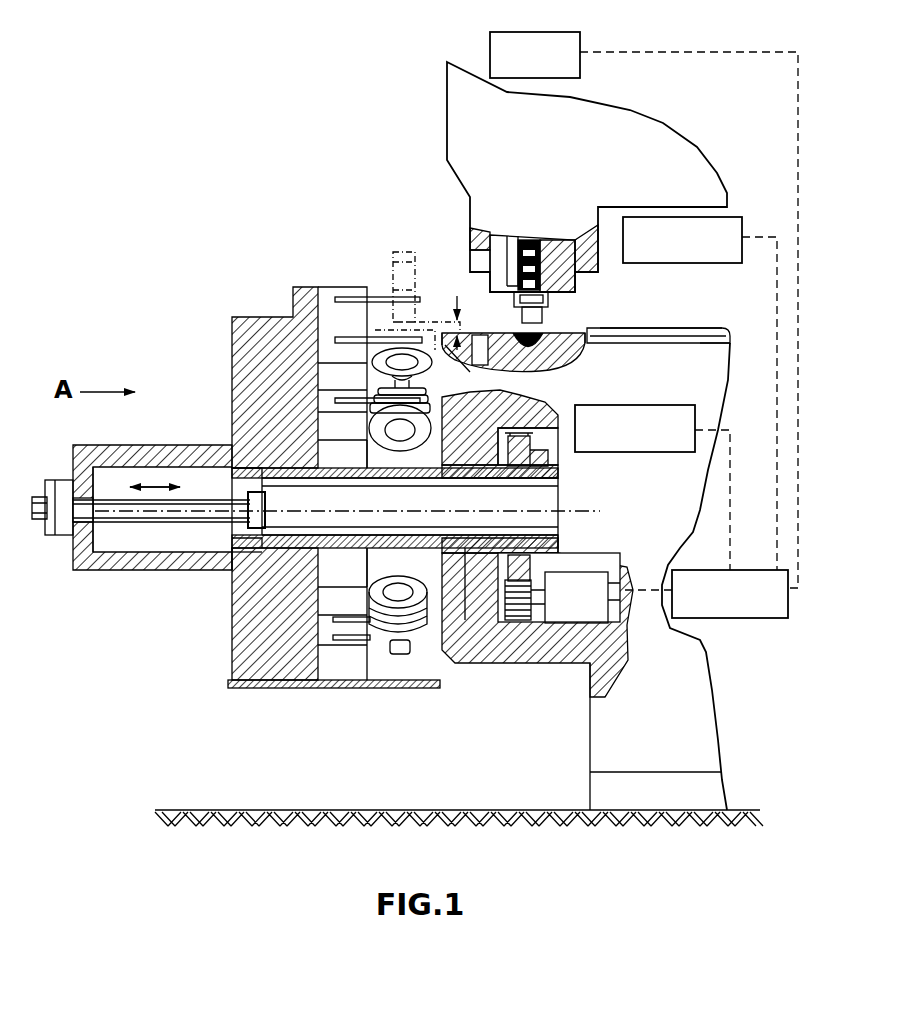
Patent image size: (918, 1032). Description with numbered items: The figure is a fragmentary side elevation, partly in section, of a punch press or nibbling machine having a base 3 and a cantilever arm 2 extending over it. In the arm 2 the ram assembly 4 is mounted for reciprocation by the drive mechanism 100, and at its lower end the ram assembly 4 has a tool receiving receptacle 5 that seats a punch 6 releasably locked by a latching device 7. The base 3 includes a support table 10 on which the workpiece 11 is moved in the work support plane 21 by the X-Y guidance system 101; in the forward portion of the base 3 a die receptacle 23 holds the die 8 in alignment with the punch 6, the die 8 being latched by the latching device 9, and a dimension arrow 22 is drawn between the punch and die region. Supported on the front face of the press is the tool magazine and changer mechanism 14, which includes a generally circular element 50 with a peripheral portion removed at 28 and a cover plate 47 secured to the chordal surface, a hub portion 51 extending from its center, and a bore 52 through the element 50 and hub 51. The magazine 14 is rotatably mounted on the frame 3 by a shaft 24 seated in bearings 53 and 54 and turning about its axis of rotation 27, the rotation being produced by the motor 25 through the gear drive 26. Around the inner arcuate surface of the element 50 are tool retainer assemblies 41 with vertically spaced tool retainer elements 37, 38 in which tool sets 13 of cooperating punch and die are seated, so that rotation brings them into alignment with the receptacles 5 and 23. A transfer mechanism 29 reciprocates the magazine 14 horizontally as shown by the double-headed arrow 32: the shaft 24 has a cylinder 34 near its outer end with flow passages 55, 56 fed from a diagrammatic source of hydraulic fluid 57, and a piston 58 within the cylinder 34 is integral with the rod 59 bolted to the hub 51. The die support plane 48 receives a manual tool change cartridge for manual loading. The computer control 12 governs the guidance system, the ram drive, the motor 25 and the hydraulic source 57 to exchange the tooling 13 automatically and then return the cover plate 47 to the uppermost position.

The cantilever arm 2 is at (673, 178).
The base 3 is at (690, 400).
The ram assembly 4 is at (578, 284).
The tool receiving receptacle 5 is at (497, 263).
The punch 6 is at (540, 240).
The latching device 7 is at (510, 244).
The die 8 is at (573, 346).
The latching device 9 is at (497, 362).
The support table 10 is at (718, 341).
The workpiece 11 is at (640, 329).
The computer control 12 is at (755, 570).
The tool set 13 is at (552, 313).
The tool magazine and changer mechanism 14 is at (265, 314).
The work support plane 21 is at (668, 329).
The gap 22 is at (473, 313).
The die receptacle 23 is at (472, 345).
The shaft 24 is at (535, 491).
The motor 25 is at (600, 586).
The gear drive 26 is at (540, 568).
The axis of rotation 27 is at (590, 499).
The removed portion 28 is at (264, 688).
The transfer mechanism 29 is at (216, 533).
The double-headed arrow 32 is at (158, 484).
The cylinder 34 is at (248, 570).
The tool retainer element 37 is at (372, 297).
The tool retainer element 38 is at (352, 335).
The tool retainer assembly 41 is at (328, 318).
The cover plate 47 is at (348, 690).
The die support plane 48 is at (446, 378).
The circular element 50 is at (245, 618).
The hub portion 51 is at (118, 445).
The bore 52 is at (115, 547).
The bearing 53 is at (468, 550).
The bearing 54 is at (300, 556).
The flow passage 55 is at (400, 490).
The flow passage 56 is at (258, 470).
The source of hydraulic fluid 57 is at (642, 405).
The piston 58 is at (232, 542).
The rod 59 is at (78, 466).
The drive mechanism 100 is at (742, 217).
The X-Y guidance system 101 is at (500, 32).